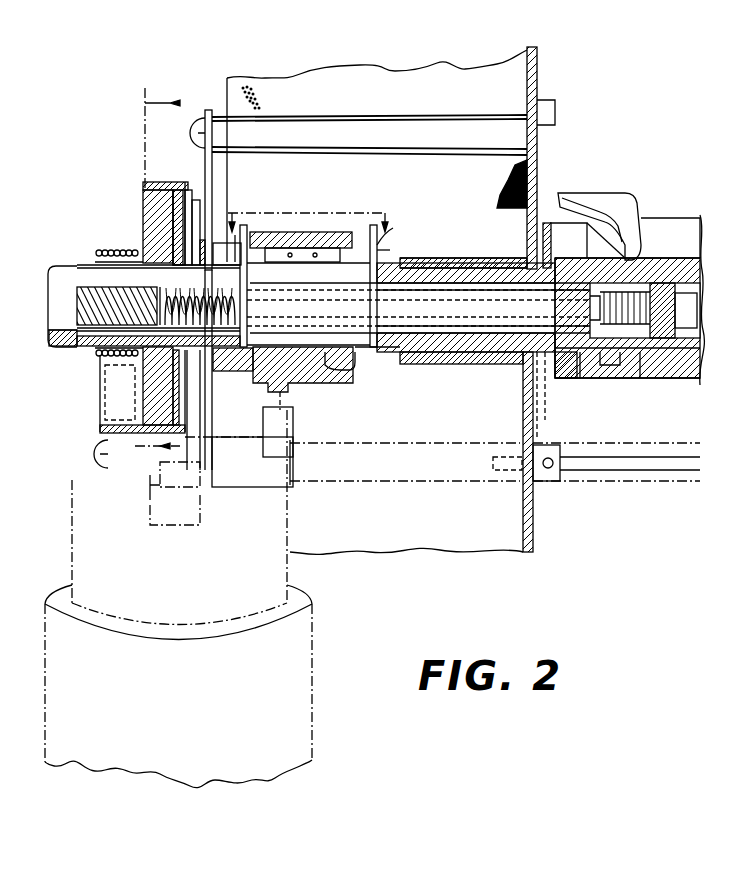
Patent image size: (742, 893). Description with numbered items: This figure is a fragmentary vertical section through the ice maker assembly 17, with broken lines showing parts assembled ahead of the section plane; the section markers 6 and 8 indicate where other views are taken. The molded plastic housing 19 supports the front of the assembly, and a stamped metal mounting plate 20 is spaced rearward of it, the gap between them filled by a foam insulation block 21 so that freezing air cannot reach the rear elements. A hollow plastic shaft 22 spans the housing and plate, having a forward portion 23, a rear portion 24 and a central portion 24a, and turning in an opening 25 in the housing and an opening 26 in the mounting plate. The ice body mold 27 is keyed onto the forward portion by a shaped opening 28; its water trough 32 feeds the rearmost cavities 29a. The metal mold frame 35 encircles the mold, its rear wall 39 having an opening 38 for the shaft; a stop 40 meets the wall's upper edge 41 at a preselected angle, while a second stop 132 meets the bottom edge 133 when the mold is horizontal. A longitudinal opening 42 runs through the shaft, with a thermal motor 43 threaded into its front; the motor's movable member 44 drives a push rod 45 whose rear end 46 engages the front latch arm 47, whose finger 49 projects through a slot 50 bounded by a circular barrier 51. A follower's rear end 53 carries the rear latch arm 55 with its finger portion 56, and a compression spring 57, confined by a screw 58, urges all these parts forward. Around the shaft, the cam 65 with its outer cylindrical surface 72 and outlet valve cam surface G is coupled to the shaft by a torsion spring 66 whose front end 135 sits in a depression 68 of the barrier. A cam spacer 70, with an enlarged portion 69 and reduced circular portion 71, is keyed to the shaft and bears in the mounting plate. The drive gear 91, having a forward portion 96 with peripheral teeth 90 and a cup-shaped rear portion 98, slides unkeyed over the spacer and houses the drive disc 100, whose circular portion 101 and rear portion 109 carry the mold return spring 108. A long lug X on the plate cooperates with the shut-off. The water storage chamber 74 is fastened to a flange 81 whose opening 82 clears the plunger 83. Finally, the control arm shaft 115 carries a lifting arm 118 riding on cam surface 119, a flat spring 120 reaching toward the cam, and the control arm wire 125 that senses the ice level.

The section line 6- 6 is at (164, 271).
The section line 8- 8 is at (317, 215).
The ice maker assembly 17 is at (599, 211).
The housing 19 is at (527, 165).
The mounting plate 20 is at (212, 112).
The insulation block 21 is at (401, 181).
The shaft 22 is at (400, 262).
The forward portion 23 is at (615, 365).
The rear portion 24 is at (85, 350).
The central portion 24a is at (382, 360).
The opening 25 is at (510, 258).
The opening 26 is at (203, 262).
The ice body mold 27 is at (670, 226).
The opening 28 is at (650, 372).
The rearmost cavities 29a is at (672, 206).
The water trough 32 is at (586, 190).
The mold frame 35 is at (698, 378).
The opening 38 is at (568, 260).
The rear wall 39 is at (570, 380).
The stop 40 is at (555, 112).
The upper edge 41 is at (546, 225).
The opening 42 is at (585, 290).
The thermal motor 43 is at (697, 323).
The movable member 44 is at (595, 322).
The push rod 45 is at (455, 340).
The rear end 46 is at (354, 352).
The front latch arm 47 is at (395, 228).
The finger 49 is at (389, 240).
The slot 50 is at (78, 270).
The circular barrier 51 is at (372, 240).
The rear end 53 is at (205, 292).
The rear latch arm 55 is at (238, 270).
The finger portion 56 is at (227, 254).
The compression spring 57 is at (170, 285).
The screw 58 is at (55, 282).
The cam 65 is at (314, 380).
The torsion spring 66 is at (292, 250).
The depression 68 is at (333, 380).
The enlarged portion 69 is at (232, 235).
The cam spacer 70 is at (224, 370).
The reduced circular portion 71 is at (190, 225).
The outer cylindrical surface 72 is at (328, 232).
The water storage chamber 74 is at (290, 512).
The flange 81 is at (148, 518).
The opening 82 is at (160, 490).
The plunger 83 is at (210, 490).
The peripheral teeth 90 is at (193, 360).
The drive gear 91 is at (172, 182).
The forward portion 96 is at (198, 240).
The rear portion 98 is at (160, 184).
The drive disc 100 is at (136, 224).
The circular portion 101 is at (148, 200).
The mold return spring 108 is at (132, 251).
The rear portion 109 is at (97, 262).
The control arm shaft 115 is at (388, 452).
The lifting arm 118 is at (120, 405).
The cam surface 119 is at (100, 428).
The flat spring 120 is at (280, 398).
The control arm wire 125 is at (660, 460).
The second stop 132 is at (543, 412).
The bottom edge 133 is at (558, 380).
The front end 135 is at (362, 358).
The cam surface G is at (272, 396).
The long lug X is at (293, 420).